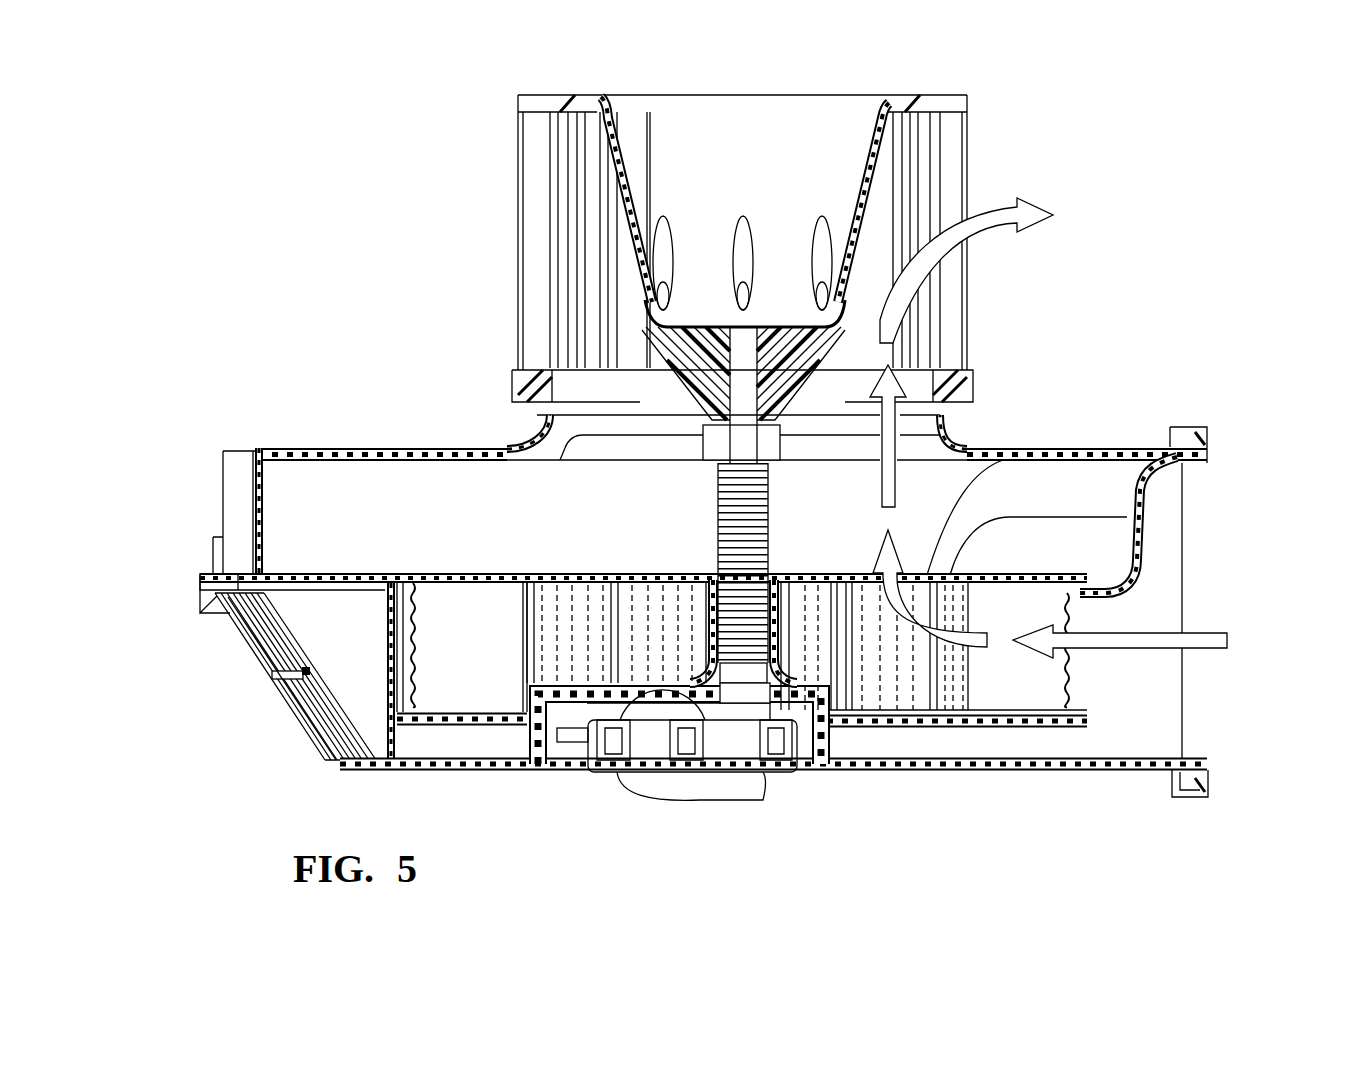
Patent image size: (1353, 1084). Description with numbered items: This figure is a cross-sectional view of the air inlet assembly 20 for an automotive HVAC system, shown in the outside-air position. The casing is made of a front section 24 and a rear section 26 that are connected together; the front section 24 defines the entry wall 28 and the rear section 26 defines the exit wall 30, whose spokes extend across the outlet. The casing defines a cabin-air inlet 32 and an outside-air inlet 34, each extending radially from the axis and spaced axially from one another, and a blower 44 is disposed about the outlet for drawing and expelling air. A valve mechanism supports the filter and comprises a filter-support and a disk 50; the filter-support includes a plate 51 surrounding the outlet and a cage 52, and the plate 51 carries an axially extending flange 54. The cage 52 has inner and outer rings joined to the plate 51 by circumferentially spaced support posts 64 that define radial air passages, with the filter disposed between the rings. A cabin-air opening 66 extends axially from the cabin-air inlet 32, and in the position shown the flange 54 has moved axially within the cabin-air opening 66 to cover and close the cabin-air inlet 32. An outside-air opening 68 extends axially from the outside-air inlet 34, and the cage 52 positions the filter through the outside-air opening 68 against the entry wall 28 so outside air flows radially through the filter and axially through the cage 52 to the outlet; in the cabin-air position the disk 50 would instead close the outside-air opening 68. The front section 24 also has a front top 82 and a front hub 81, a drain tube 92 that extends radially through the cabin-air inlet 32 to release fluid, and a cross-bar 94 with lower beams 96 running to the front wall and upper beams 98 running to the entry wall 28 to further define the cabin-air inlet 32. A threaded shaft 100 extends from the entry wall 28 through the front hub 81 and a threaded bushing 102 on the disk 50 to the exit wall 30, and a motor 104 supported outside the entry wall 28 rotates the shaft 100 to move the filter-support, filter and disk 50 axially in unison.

The air inlet assembly 20 is at (1215, 318).
The front section 24 is at (1133, 773).
The rear section 26 is at (1128, 447).
The entry wall 28 is at (1047, 767).
The exit wall 30 is at (1073, 447).
The cabin-air inlet 32 is at (313, 727).
The outside-air inlet 34 is at (1182, 555).
The blower 44 is at (960, 150).
The disk 50 is at (973, 727).
The plate 51 is at (393, 575).
The cage 52 is at (617, 573).
The flange 54 is at (325, 575).
The support posts 64 is at (940, 693).
The cabin-air opening 66 is at (340, 636).
The outside-air opening 68 is at (1125, 699).
The front hub 81 is at (598, 698).
The front top 82 is at (1207, 440).
The drain tube 92 is at (215, 612).
The cross-bar 94 is at (280, 678).
The lower beams 96 is at (263, 633).
The upper beams 98 is at (338, 700).
The shaft 100 is at (730, 578).
The threaded bushing 102 is at (775, 615).
The motor 104 is at (733, 780).